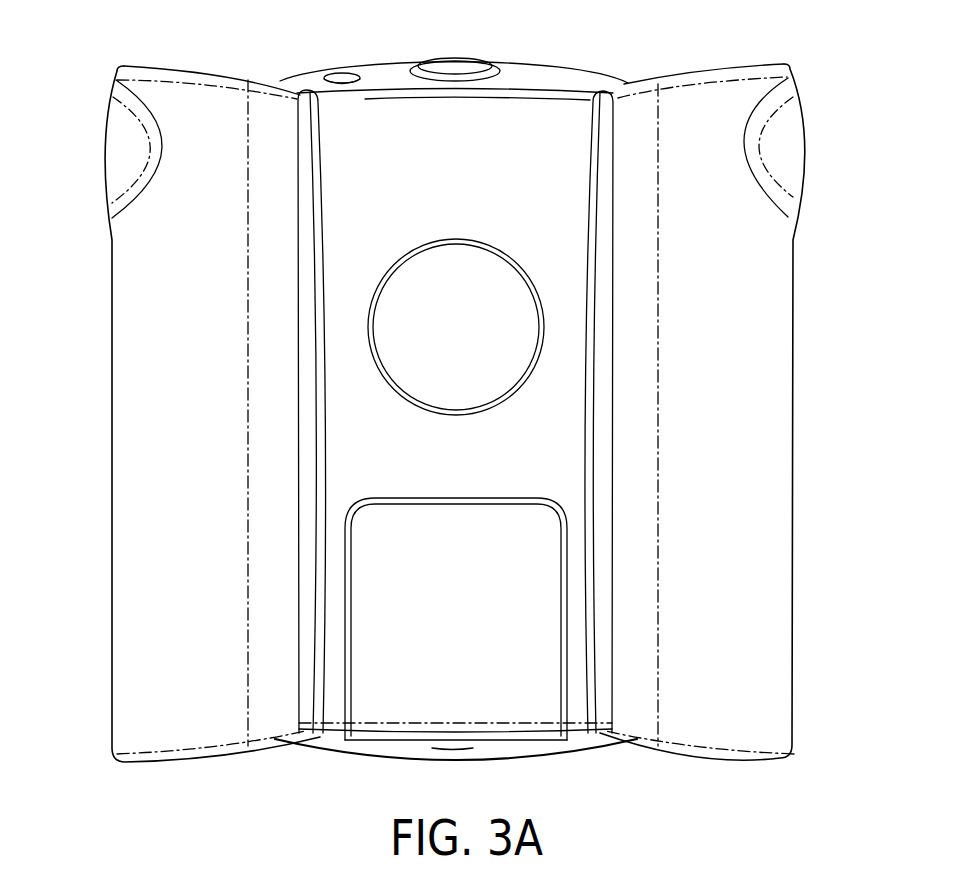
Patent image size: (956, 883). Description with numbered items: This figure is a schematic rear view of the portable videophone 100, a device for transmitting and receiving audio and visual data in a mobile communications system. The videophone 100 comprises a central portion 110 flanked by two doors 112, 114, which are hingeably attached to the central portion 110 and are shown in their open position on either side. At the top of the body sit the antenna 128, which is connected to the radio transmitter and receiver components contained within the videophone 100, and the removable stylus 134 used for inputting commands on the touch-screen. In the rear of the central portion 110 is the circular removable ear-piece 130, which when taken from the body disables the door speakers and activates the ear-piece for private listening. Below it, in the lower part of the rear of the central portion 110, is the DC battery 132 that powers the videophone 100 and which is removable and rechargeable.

The videophone 100 is at (100, 262).
The central portion 110 is at (570, 115).
The door 112 is at (773, 697).
The door 114 is at (135, 694).
The antenna 128 is at (470, 66).
The removable ear-piece 130 is at (482, 288).
The DC battery 132 is at (510, 712).
The removable stylus 134 is at (338, 74).